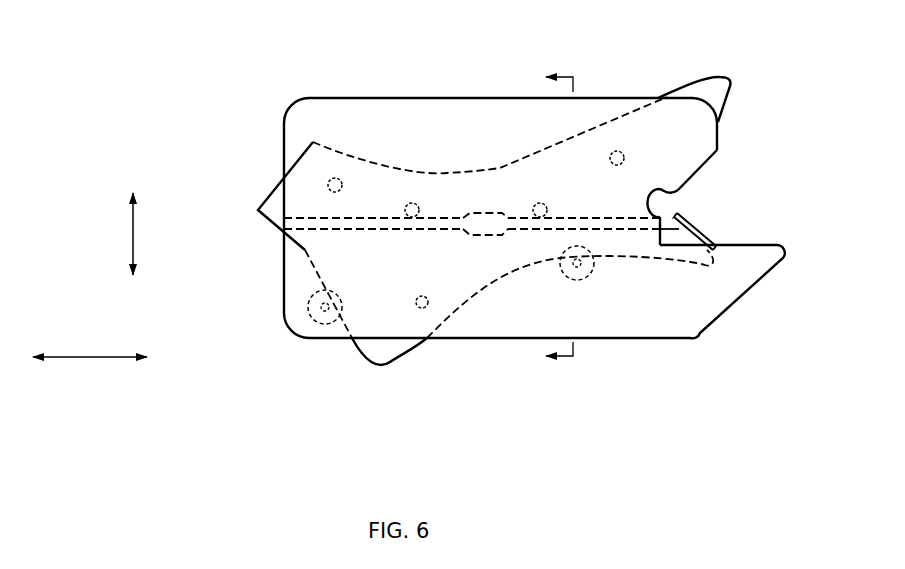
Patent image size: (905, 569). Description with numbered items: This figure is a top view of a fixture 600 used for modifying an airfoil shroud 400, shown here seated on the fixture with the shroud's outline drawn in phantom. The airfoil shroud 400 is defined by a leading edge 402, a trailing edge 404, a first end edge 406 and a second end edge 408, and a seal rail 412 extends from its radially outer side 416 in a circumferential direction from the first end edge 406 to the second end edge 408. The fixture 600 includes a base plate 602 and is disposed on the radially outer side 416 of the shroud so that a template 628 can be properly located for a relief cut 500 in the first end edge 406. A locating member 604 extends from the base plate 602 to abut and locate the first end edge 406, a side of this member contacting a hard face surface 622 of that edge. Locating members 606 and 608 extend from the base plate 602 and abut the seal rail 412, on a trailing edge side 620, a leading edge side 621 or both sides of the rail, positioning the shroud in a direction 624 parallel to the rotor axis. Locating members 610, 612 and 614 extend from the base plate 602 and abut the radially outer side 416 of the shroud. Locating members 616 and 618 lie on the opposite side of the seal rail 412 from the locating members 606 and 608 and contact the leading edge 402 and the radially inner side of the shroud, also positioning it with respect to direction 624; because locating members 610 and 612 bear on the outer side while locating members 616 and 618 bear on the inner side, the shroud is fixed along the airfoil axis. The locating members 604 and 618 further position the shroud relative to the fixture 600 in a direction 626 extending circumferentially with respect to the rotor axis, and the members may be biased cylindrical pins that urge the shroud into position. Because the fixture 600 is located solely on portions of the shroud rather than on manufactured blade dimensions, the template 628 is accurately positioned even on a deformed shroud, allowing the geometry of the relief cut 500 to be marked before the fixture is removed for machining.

The airfoil shroud 400 is at (733, 73).
The leading edge 402 is at (357, 342).
The trailing edge 404 is at (399, 160).
The first end edge 406 is at (700, 177).
The second end edge 408 is at (277, 183).
The seal rail 412 is at (330, 225).
The radially outer side 416 is at (680, 115).
The relief cut 500 is at (682, 203).
The fixture 600 is at (516, 348).
The base plate 602 is at (670, 327).
The locating member 604 is at (700, 223).
The locating member 606 is at (538, 201).
The locating member 608 is at (412, 201).
The locating member 610 is at (614, 150).
The locating member 612 is at (330, 176).
The locating member 614 is at (430, 309).
The locating member 616 is at (590, 277).
The locating member 618 is at (306, 316).
The trailing edge side 620 is at (442, 220).
The leading edge side 621 is at (353, 232).
The hard face surface 622 is at (684, 208).
The direction 624 is at (133, 225).
The direction 626 is at (97, 358).
The template 628 is at (667, 190).